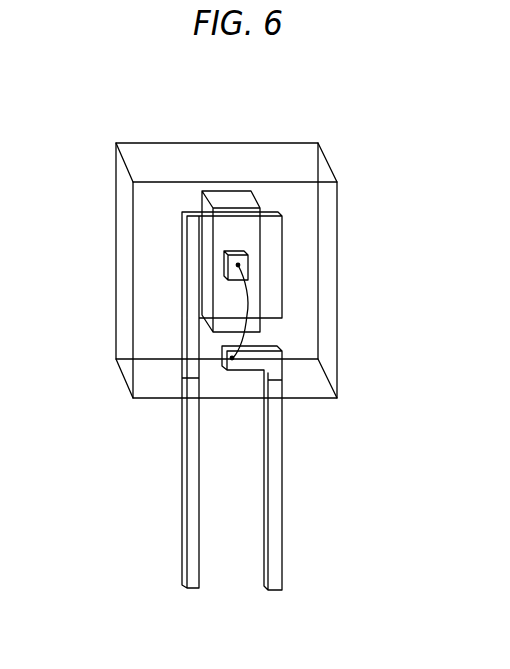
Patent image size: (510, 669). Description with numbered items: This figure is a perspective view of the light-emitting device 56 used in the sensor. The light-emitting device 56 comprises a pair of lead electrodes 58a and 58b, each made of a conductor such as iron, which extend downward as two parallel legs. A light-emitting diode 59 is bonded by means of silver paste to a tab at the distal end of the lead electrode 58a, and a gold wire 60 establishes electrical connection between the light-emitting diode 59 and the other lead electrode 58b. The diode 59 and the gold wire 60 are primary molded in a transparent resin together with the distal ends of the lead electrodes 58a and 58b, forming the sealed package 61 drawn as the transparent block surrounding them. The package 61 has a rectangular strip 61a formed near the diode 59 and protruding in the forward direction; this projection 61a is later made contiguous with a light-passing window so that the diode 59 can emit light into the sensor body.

The light-emitting device 56 is at (363, 159).
The lead electrode 58a is at (187, 547).
The lead electrode 58b is at (273, 542).
The light-emitting diode 59 is at (241, 265).
The Au wire 60 is at (247, 305).
The sealed package 61 is at (156, 152).
The rectangular strip 61a is at (232, 198).